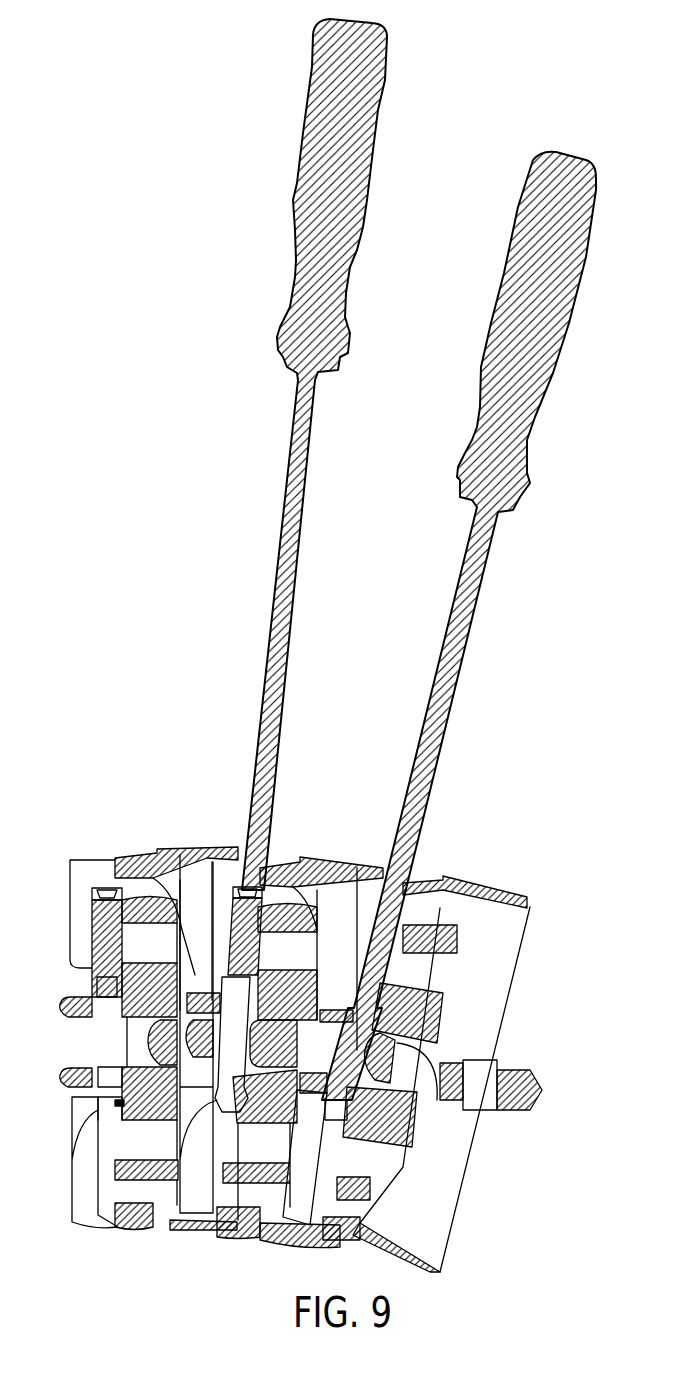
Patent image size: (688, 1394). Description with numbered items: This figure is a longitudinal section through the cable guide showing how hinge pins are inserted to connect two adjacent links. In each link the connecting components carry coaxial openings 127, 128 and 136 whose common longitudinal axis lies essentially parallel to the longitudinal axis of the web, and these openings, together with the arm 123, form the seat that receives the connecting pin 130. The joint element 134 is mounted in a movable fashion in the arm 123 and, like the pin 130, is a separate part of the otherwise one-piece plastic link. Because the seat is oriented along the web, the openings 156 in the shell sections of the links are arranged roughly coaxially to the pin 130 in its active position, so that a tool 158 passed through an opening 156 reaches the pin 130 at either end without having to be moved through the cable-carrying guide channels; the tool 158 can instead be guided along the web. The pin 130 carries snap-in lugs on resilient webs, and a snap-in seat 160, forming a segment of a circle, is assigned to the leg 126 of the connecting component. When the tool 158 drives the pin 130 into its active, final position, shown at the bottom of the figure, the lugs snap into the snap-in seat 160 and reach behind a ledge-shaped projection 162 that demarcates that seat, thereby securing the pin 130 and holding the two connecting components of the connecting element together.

The arm 123 is at (530, 1080).
The leg 126 is at (63, 1075).
The opening 127 is at (103, 1003).
The opening 128 is at (108, 1075).
The pin 130 is at (95, 912).
The joint element 134 is at (497, 1105).
The opening 136 is at (483, 1066).
The opening 156 is at (113, 862).
The tool 158 is at (462, 612).
The snap-in seat 160 is at (97, 1110).
The ledge-shaped projection 162 is at (118, 1103).